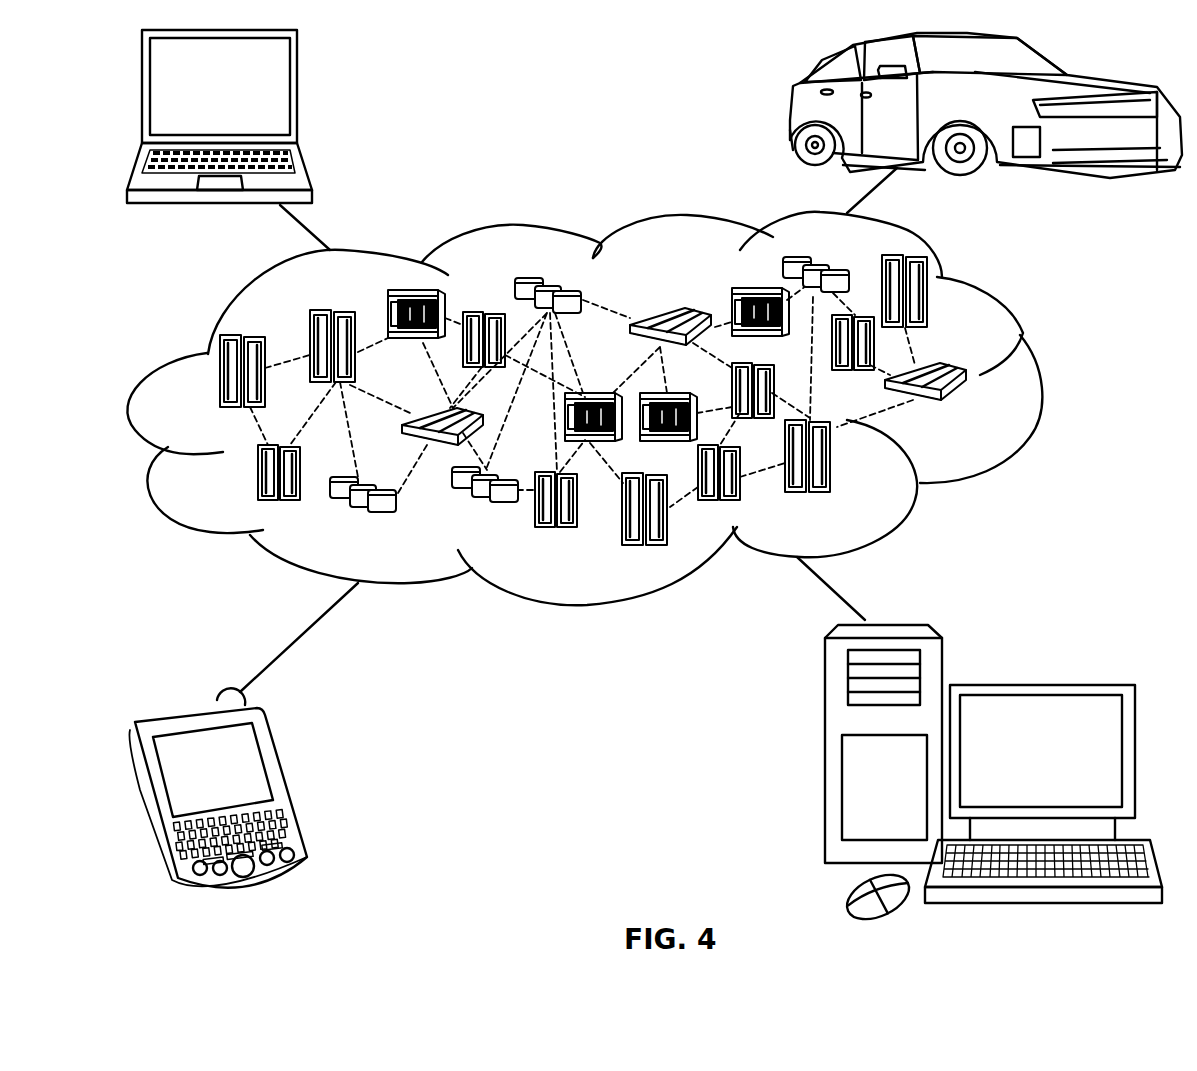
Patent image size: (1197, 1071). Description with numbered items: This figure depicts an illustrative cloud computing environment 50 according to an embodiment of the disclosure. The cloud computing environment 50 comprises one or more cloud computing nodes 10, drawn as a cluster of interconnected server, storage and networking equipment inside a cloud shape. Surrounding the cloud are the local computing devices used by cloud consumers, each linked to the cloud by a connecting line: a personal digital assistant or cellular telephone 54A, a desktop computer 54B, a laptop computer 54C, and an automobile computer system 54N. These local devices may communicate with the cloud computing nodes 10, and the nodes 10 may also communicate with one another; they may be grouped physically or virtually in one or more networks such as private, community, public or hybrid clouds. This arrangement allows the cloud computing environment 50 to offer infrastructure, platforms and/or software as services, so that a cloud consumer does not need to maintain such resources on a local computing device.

The cloud computing environment 50 is at (1040, 381).
The cloud computing nodes 10 is at (973, 412).
The personal digital assistant or cellular telephone 54A is at (287, 782).
The desktop computer 54B is at (1040, 683).
The laptop computer 54C is at (297, 96).
The automobile computer system 54N is at (790, 110).